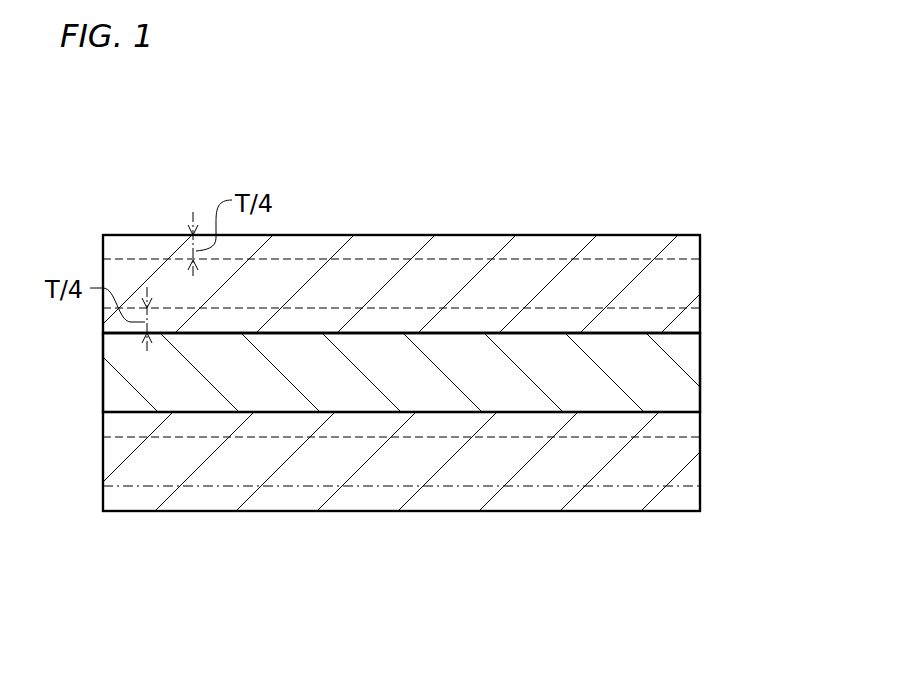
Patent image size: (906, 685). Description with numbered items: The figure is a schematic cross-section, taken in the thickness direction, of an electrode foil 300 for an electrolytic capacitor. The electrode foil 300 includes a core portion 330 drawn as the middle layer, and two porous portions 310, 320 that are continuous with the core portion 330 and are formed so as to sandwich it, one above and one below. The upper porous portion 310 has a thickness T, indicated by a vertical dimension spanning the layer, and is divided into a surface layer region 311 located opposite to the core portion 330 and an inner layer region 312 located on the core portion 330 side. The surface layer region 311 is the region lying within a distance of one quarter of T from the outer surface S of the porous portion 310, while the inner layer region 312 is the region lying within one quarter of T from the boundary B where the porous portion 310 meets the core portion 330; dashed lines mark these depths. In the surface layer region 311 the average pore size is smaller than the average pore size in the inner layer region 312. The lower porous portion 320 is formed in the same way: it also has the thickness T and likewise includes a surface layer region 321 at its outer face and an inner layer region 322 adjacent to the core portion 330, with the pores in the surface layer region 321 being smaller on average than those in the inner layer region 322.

The electrode foil 300 is at (649, 212).
The porous portion 310 is at (718, 237).
The surface layer region 311 is at (377, 241).
The inner layer region 312 is at (527, 313).
The porous portion 320 is at (718, 413).
The surface layer region 321 is at (377, 497).
The inner layer region 322 is at (507, 423).
The core portion 330 is at (680, 371).
The outer surface S is at (334, 234).
The boundary B is at (126, 335).
The thickness T is at (297, 235).